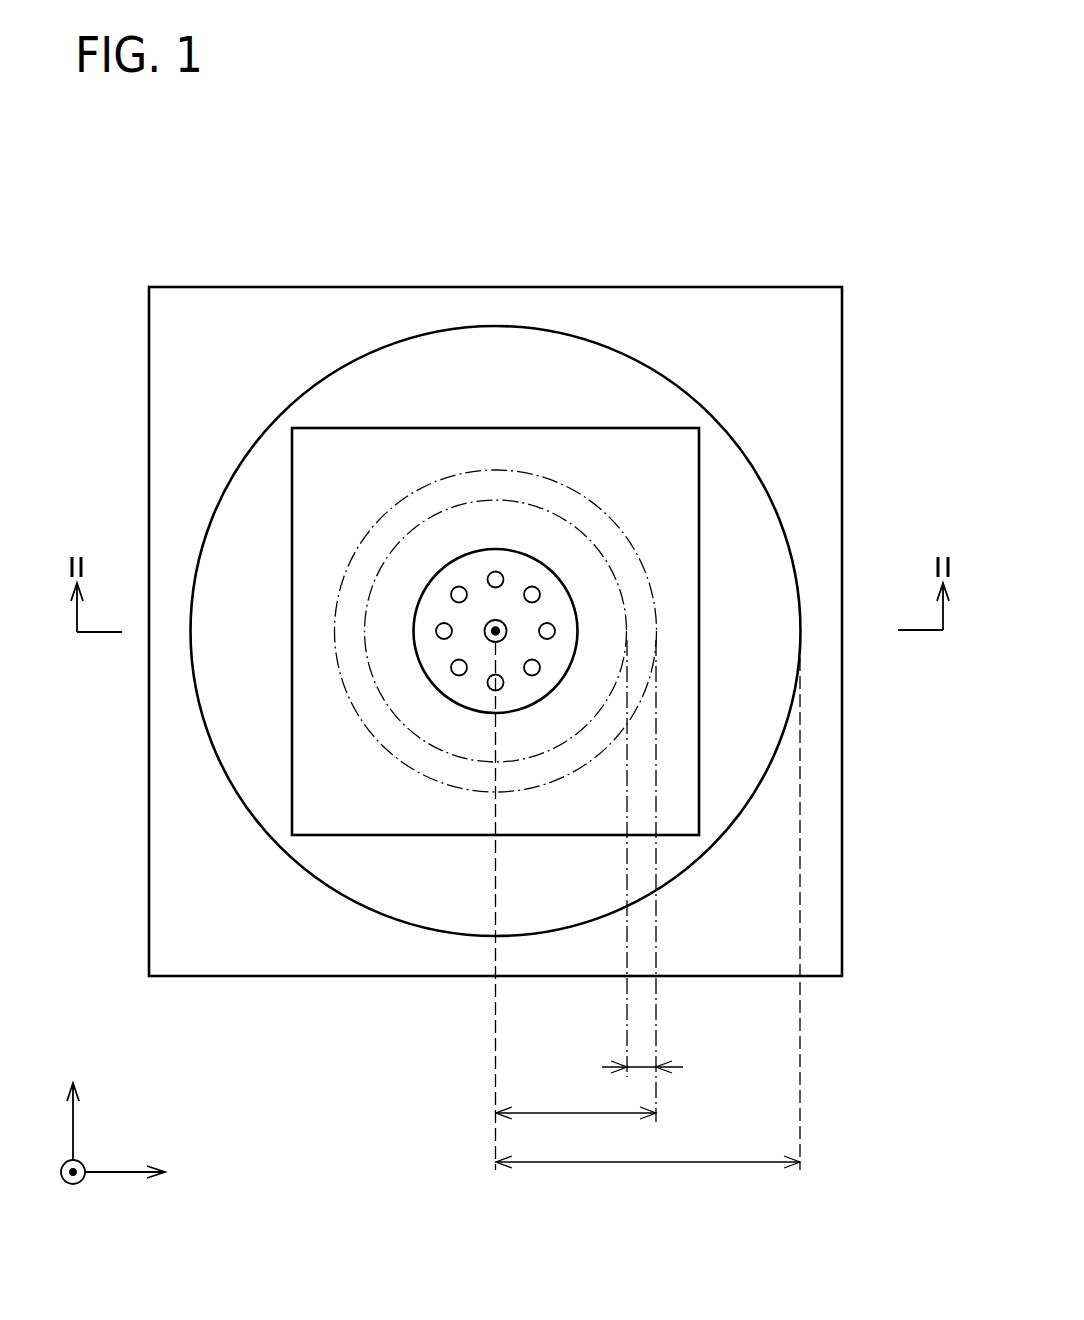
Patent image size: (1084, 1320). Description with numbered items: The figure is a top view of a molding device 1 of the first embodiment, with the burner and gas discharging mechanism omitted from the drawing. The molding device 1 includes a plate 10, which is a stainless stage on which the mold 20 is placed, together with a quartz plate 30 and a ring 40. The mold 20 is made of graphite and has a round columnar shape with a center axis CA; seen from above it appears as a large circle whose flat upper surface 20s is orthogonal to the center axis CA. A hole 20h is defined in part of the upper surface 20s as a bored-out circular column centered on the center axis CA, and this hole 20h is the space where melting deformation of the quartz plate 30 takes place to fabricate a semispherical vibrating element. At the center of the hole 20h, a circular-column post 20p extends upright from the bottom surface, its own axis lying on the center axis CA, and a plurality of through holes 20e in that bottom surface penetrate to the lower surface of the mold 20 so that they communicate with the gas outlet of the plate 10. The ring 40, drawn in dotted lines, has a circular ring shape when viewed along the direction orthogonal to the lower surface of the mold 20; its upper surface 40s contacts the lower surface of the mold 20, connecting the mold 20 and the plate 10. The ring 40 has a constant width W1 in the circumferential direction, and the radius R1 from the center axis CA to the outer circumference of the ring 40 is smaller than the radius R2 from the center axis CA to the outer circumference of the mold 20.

The molding device 1 is at (932, 174).
The plate 10 is at (802, 395).
The mold 20 is at (498, 319).
The upper surface 20s is at (731, 475).
The hole 20h is at (448, 572).
The through holes 20e is at (461, 587).
The post 20p is at (484, 624).
The quartz plate 30 is at (410, 457).
The ring 40 is at (377, 748).
The upper surface of the ring 40s is at (361, 690).
The center axis CA is at (488, 632).
The width of the ring W1 is at (640, 1067).
The radius to outer circumference of the ring R1 is at (576, 1130).
The radius to outer circumference of the mold R2 is at (648, 920).